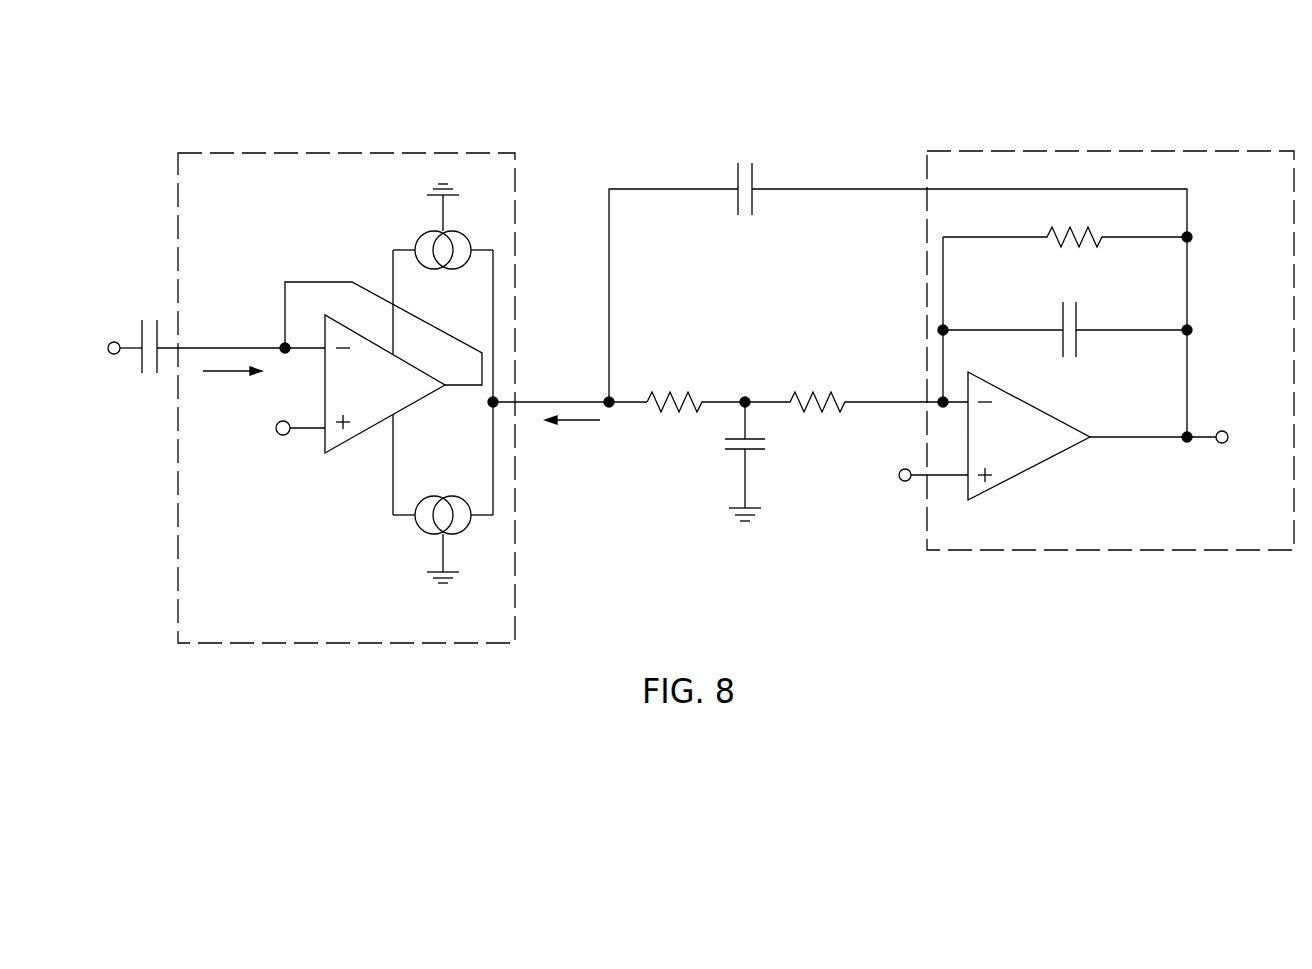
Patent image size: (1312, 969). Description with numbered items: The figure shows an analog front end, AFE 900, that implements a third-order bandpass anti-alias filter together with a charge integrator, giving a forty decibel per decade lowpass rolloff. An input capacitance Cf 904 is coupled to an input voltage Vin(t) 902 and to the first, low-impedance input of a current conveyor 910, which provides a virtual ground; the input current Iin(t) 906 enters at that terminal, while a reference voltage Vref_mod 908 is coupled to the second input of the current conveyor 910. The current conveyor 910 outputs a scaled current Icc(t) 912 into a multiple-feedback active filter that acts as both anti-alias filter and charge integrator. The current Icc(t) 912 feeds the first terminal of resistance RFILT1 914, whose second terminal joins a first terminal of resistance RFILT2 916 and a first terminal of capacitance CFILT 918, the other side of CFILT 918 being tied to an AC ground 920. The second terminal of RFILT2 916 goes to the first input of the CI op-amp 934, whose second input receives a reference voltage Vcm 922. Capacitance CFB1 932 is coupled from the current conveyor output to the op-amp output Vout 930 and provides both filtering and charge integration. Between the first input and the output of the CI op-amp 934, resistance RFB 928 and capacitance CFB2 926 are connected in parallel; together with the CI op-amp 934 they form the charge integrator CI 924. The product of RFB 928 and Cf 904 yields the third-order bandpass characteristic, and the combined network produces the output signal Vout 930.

The AFE 900 is at (673, 336).
The input voltage Vin(t) 902 is at (73, 363).
The input capacitance Cf 904 is at (135, 287).
The input current Iin(t) 906 is at (236, 420).
The reference voltage Vref_mod 908 is at (285, 477).
The current conveyor 910 is at (323, 224).
The current Icc(t) 912 is at (560, 477).
The resistance RFILT1 914 is at (668, 350).
The resistance RFILT2 916 is at (813, 352).
The capacitance CFILT 918 is at (752, 457).
The AC ground 920 is at (772, 522).
The reference voltage Vcm 922 is at (886, 490).
The CI 924 is at (1145, 151).
The capacitance CFB2 926 is at (1087, 289).
The resistance RFB 928 is at (1095, 225).
The output signal Vout 930 is at (1255, 455).
The capacitance CFB1 932 is at (770, 146).
The CI op-amp 934 is at (1042, 410).